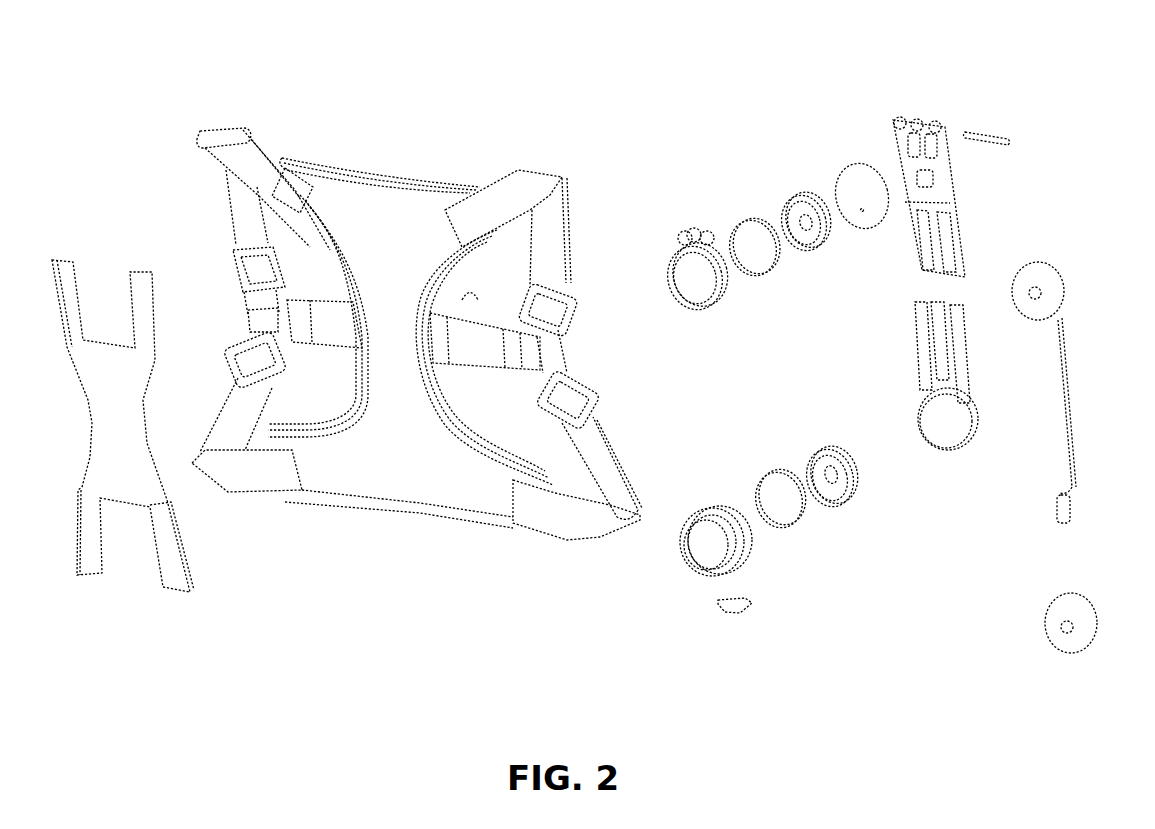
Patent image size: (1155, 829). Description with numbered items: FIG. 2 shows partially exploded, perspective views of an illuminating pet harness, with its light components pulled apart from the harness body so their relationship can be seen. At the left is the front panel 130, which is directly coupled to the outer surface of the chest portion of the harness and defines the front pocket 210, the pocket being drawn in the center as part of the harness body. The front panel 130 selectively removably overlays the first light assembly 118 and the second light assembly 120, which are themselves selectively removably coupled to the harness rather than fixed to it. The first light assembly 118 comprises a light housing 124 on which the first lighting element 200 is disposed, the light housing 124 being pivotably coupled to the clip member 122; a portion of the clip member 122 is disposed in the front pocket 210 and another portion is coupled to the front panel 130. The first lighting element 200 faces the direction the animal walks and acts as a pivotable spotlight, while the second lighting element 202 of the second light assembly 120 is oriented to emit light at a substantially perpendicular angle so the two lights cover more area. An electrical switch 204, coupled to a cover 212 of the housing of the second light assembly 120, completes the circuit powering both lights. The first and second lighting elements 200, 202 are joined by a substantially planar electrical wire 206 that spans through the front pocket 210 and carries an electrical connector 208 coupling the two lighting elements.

The front panel 130 is at (68, 272).
The front pocket 210 is at (384, 285).
The light housing 124 is at (669, 208).
The first light assembly 118 is at (800, 178).
The clip member 122 is at (909, 111).
The first lighting element 200 is at (1034, 286).
The electrical wire 206 is at (1065, 375).
The electrical connector 208 is at (1056, 501).
The second lighting element 202 is at (1071, 626).
The second light assembly 120 is at (784, 458).
The cover 212 is at (724, 553).
The electrical switch 204 is at (723, 611).